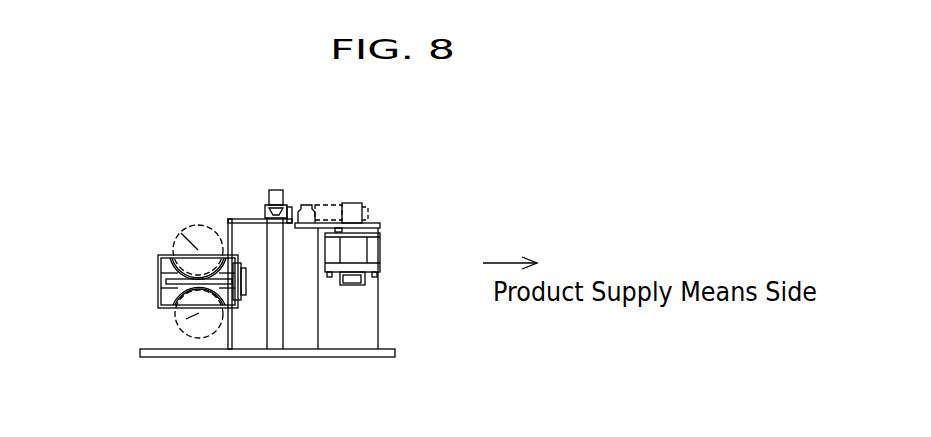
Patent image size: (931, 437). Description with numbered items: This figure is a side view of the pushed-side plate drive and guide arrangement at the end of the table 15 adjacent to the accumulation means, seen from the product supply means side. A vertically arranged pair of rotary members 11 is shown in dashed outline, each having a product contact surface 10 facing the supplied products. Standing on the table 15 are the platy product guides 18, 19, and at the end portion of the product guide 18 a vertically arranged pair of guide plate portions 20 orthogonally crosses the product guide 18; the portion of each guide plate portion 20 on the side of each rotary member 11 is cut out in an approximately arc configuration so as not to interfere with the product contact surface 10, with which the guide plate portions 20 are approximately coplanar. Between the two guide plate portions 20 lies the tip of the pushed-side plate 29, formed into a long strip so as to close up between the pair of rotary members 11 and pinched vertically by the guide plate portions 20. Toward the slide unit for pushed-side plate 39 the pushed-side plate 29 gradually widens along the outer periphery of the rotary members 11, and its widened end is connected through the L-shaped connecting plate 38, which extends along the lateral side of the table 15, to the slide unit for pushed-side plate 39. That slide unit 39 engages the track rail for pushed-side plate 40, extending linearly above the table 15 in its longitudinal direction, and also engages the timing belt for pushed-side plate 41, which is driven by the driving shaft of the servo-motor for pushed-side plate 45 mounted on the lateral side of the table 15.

The product contact surface 10 is at (180, 230).
The rotary member 11 is at (174, 255).
The table 15 is at (176, 318).
The product guide 18 is at (165, 267).
The product guide 19 is at (241, 278).
The guide plate portions 20 is at (159, 256).
The pushed-side plate 29 is at (165, 281).
The L-shaped connecting plate 38 is at (251, 219).
The slide unit for pushed-side plate 39 is at (299, 205).
The track rail for pushed-side plate 40 is at (275, 190).
The timing belt for pushed-side plate 41 is at (327, 207).
The servo-motor for pushed-side plate 45 is at (355, 250).